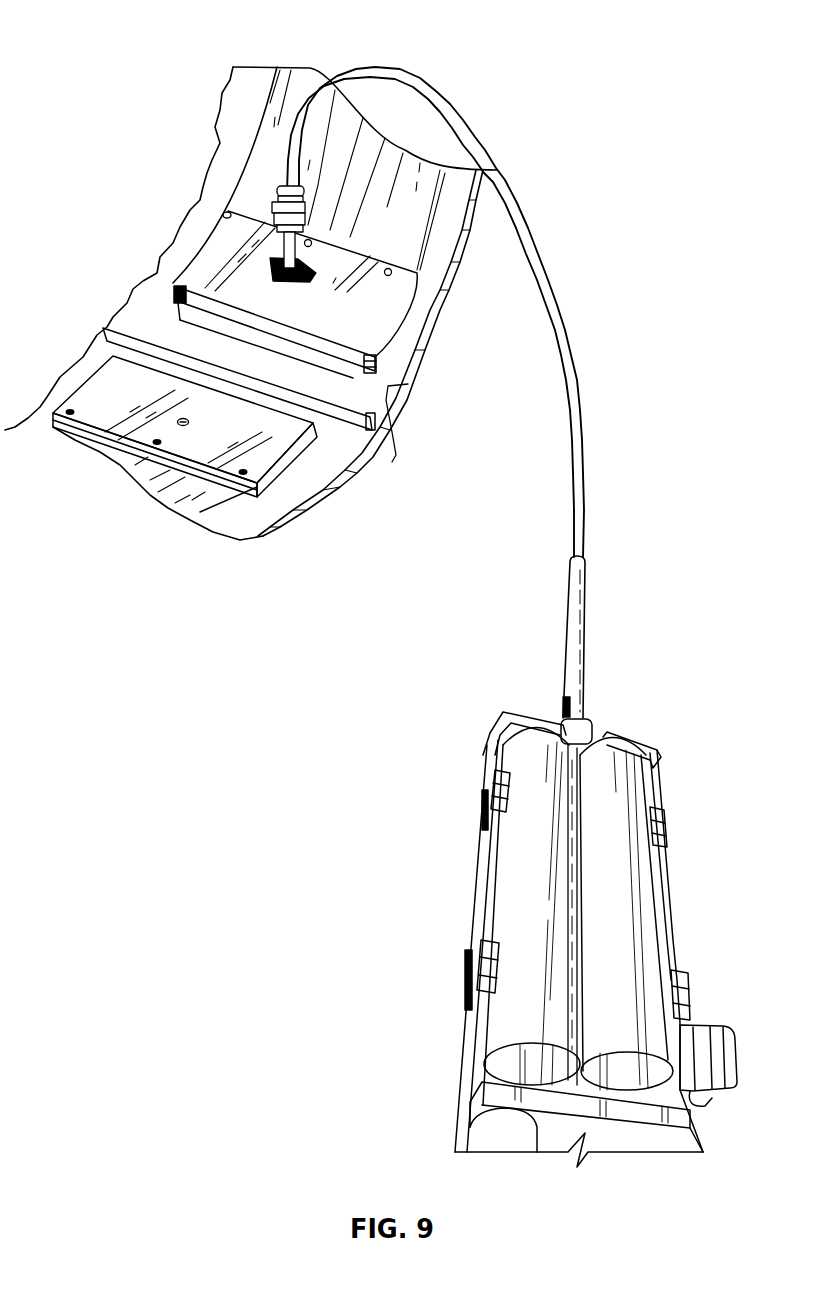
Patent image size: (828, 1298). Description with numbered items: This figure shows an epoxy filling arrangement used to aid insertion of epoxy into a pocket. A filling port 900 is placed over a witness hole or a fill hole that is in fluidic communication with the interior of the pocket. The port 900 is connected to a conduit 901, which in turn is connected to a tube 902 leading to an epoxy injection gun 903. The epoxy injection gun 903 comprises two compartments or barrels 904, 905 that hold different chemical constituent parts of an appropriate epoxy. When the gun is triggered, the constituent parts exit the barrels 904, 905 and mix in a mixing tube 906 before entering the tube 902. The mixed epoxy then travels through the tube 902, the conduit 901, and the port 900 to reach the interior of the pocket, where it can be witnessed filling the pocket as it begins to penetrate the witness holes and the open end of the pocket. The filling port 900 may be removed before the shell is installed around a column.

The filling port 900 is at (284, 240).
The conduit 901 is at (280, 215).
The tube 902 is at (395, 66).
The epoxy injection gun 903 is at (648, 782).
The barrel 904 is at (518, 877).
The barrel 905 is at (625, 893).
The mixing tube 906 is at (577, 603).